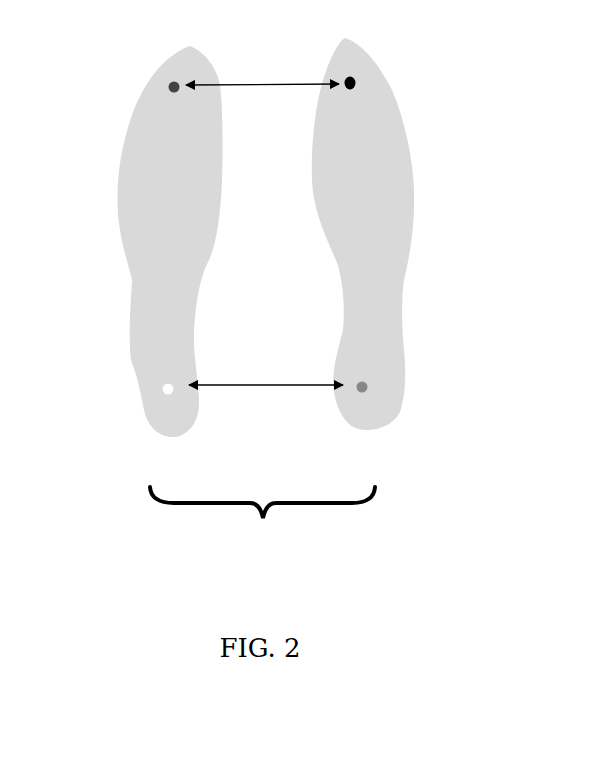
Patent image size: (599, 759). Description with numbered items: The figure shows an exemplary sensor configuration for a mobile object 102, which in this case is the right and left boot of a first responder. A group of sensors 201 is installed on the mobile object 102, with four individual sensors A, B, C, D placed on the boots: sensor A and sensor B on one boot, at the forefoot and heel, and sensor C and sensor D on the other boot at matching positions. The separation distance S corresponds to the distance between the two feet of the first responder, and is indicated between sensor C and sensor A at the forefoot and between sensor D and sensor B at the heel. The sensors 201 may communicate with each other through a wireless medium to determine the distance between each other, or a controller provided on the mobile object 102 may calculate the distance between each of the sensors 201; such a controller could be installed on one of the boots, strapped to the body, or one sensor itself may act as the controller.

The mobile object 102 is at (266, 319).
The sensors 201 is at (265, 224).
The sensor A is at (369, 65).
The sensor B is at (380, 374).
The sensor C is at (140, 69).
The sensor D is at (162, 393).
The separation distance S is at (264, 196).